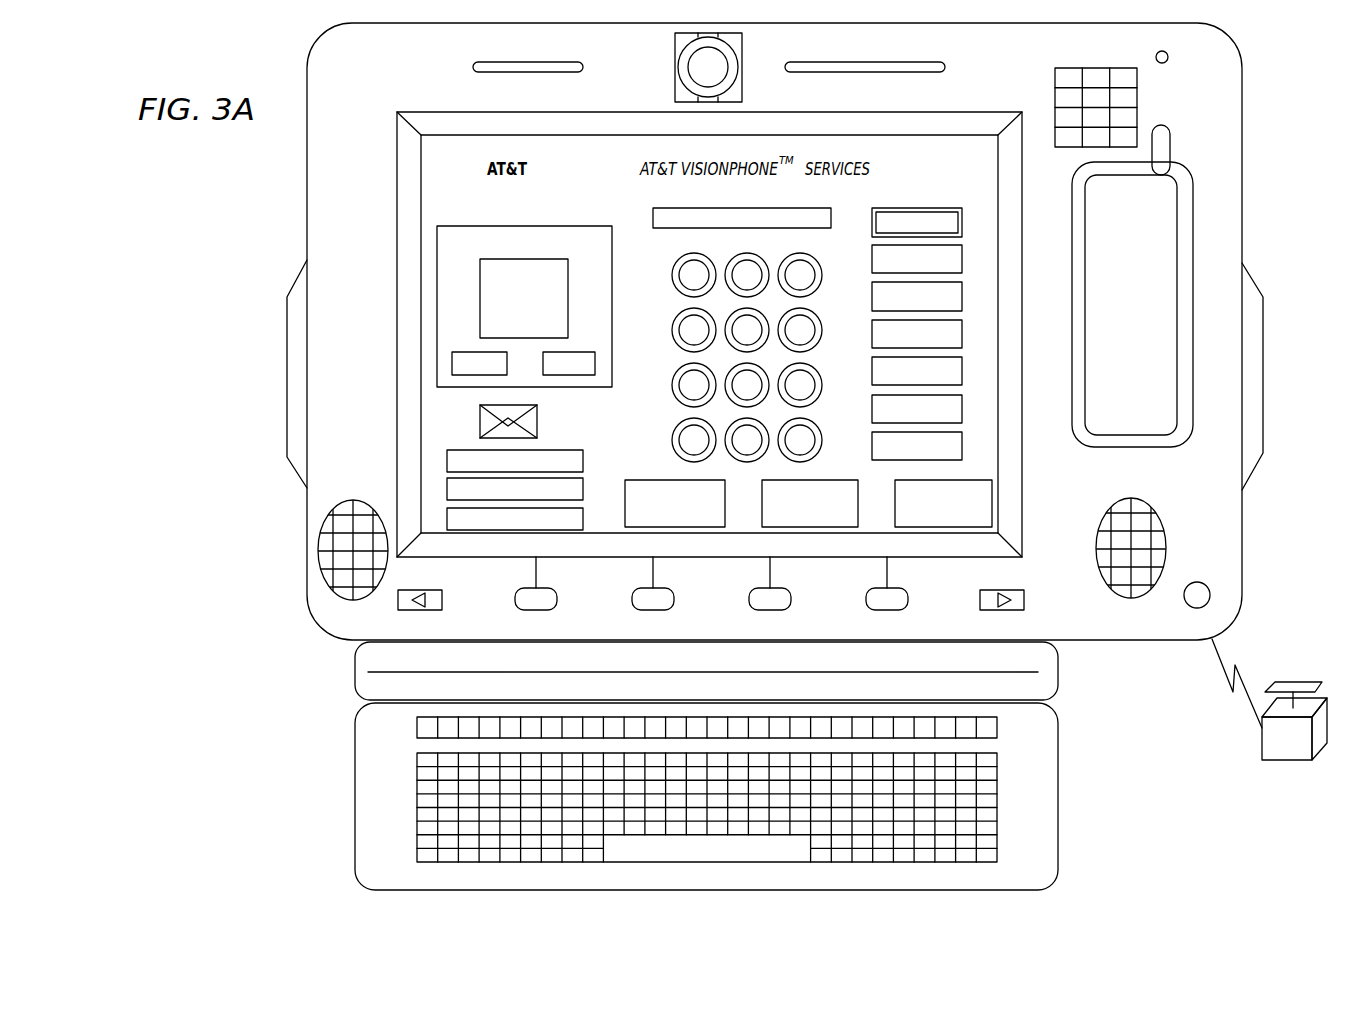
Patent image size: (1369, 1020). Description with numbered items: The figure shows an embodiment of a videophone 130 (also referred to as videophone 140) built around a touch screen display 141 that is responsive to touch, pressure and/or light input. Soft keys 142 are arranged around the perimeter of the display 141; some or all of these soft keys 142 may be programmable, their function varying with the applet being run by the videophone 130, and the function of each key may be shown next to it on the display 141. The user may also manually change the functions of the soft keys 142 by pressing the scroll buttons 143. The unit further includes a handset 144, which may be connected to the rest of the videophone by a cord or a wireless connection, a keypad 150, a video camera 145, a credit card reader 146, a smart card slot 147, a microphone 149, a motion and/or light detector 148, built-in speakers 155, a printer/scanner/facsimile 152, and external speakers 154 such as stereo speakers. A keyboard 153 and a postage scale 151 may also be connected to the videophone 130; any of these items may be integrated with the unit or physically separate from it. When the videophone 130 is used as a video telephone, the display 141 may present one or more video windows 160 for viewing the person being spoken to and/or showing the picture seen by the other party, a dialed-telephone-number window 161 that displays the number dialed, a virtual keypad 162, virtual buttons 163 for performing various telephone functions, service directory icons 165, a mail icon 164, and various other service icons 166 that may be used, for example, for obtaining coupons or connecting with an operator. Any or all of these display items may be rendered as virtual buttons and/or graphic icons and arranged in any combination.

The videophone 130 is at (827, 331).
The videophone 140 is at (1243, 103).
The touch screen display 141 is at (408, 252).
The soft keys 142 is at (557, 598).
The scroll buttons 143 is at (442, 598).
The handset 144 is at (1147, 307).
The video camera 145 is at (675, 52).
The credit card reader 146 is at (505, 72).
The smart card slot 147 is at (908, 72).
The motion and/or light detector 148 is at (1168, 60).
The microphone 149 is at (1190, 580).
The keypad 150 is at (1065, 68).
The postage scale 151 is at (1258, 745).
The printer/scanner/facsimile 152 is at (1058, 665).
The keyboard 153 is at (1058, 800).
The external speakers 154 is at (287, 393).
The built-in speaker 155 is at (323, 575).
The video window 160 is at (585, 237).
The dialed-telephone-number window 161 is at (755, 220).
The virtual keypad 162 is at (665, 245).
The virtual buttons 163 is at (868, 203).
The mail icon 164 is at (539, 423).
The service directory icons 165 is at (445, 532).
The service icons 166 is at (640, 480).